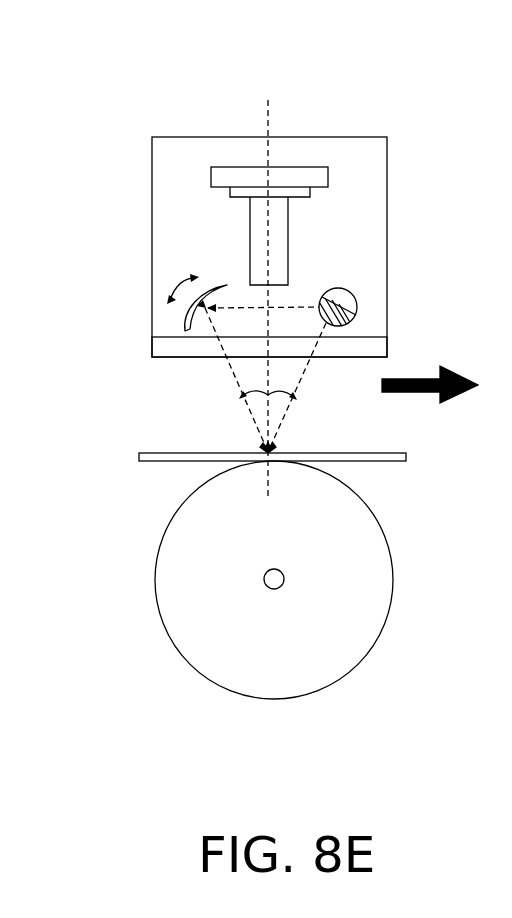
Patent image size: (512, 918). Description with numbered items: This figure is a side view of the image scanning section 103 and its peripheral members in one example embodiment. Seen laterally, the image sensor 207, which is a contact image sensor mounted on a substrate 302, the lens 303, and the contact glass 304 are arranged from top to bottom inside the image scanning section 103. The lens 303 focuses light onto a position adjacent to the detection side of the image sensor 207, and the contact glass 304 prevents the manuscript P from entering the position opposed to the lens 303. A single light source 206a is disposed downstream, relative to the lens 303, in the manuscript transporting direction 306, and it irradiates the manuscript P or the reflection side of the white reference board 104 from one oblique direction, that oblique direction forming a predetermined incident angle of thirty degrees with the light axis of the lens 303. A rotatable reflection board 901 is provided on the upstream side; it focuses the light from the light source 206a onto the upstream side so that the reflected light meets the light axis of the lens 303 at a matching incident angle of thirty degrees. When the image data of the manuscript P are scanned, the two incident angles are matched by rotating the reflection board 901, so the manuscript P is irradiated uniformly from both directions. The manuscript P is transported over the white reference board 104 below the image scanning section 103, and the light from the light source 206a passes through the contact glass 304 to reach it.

The image scanning section 103 is at (181, 125).
The substrate 302 is at (228, 175).
The image sensor 207 is at (300, 193).
The lens 303 is at (282, 266).
The light source 206a is at (348, 298).
The contact glass 304 is at (375, 351).
The reflection board 901 is at (187, 317).
The manuscript transporting direction 306 is at (413, 393).
The manuscript P is at (143, 462).
The white reference board 104 is at (367, 587).